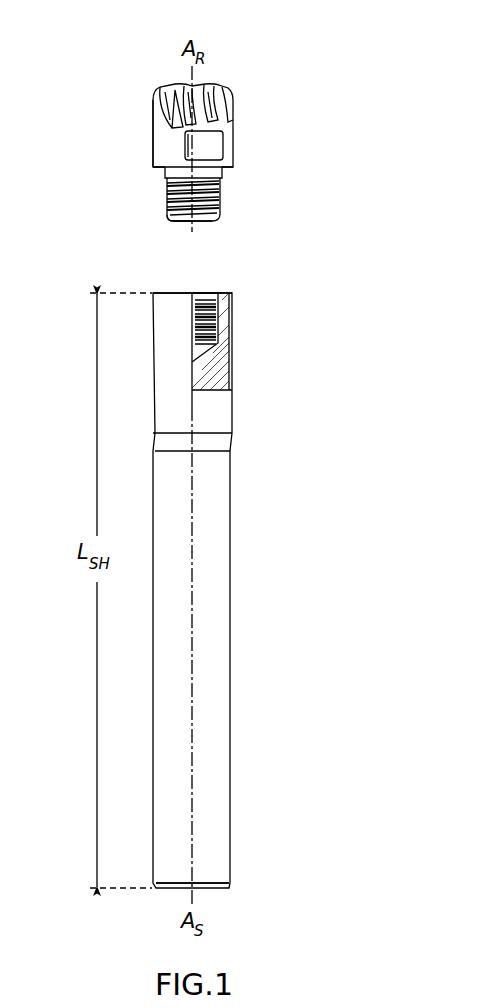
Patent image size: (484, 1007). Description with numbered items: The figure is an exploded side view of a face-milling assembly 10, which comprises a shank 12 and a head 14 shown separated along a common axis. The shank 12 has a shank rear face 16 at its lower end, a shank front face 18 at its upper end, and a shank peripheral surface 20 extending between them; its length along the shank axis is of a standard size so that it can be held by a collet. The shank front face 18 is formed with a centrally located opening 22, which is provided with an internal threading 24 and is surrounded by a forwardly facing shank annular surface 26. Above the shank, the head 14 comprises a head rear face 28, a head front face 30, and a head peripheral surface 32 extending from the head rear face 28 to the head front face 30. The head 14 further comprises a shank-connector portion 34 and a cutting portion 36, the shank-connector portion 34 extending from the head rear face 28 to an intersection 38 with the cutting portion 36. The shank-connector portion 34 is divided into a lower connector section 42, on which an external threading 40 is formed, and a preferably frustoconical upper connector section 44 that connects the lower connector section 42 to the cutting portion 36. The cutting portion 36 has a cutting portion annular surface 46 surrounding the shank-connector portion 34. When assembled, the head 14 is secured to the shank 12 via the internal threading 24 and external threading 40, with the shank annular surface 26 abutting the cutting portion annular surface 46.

The face-milling assembly 10 is at (235, 503).
The shank 12 is at (207, 597).
The head 14 is at (187, 146).
The shank rear face 16 is at (212, 893).
The shank front face 18 is at (158, 286).
The shank peripheral surface 20 is at (244, 622).
The opening 22 is at (241, 320).
The internal threading 24 is at (230, 311).
The shank annular surface 26 is at (230, 294).
The head rear face 28 is at (208, 223).
The head front face 30 is at (182, 76).
The head peripheral surface 32 is at (151, 147).
The shank-connector portion 34 is at (243, 203).
The cutting portion 36 is at (129, 131).
The intersection 38 is at (163, 170).
The external threading 40 is at (212, 208).
The lower connector section 42 is at (165, 200).
The upper connector section 44 is at (163, 179).
The cutting portion annular surface 46 is at (227, 172).